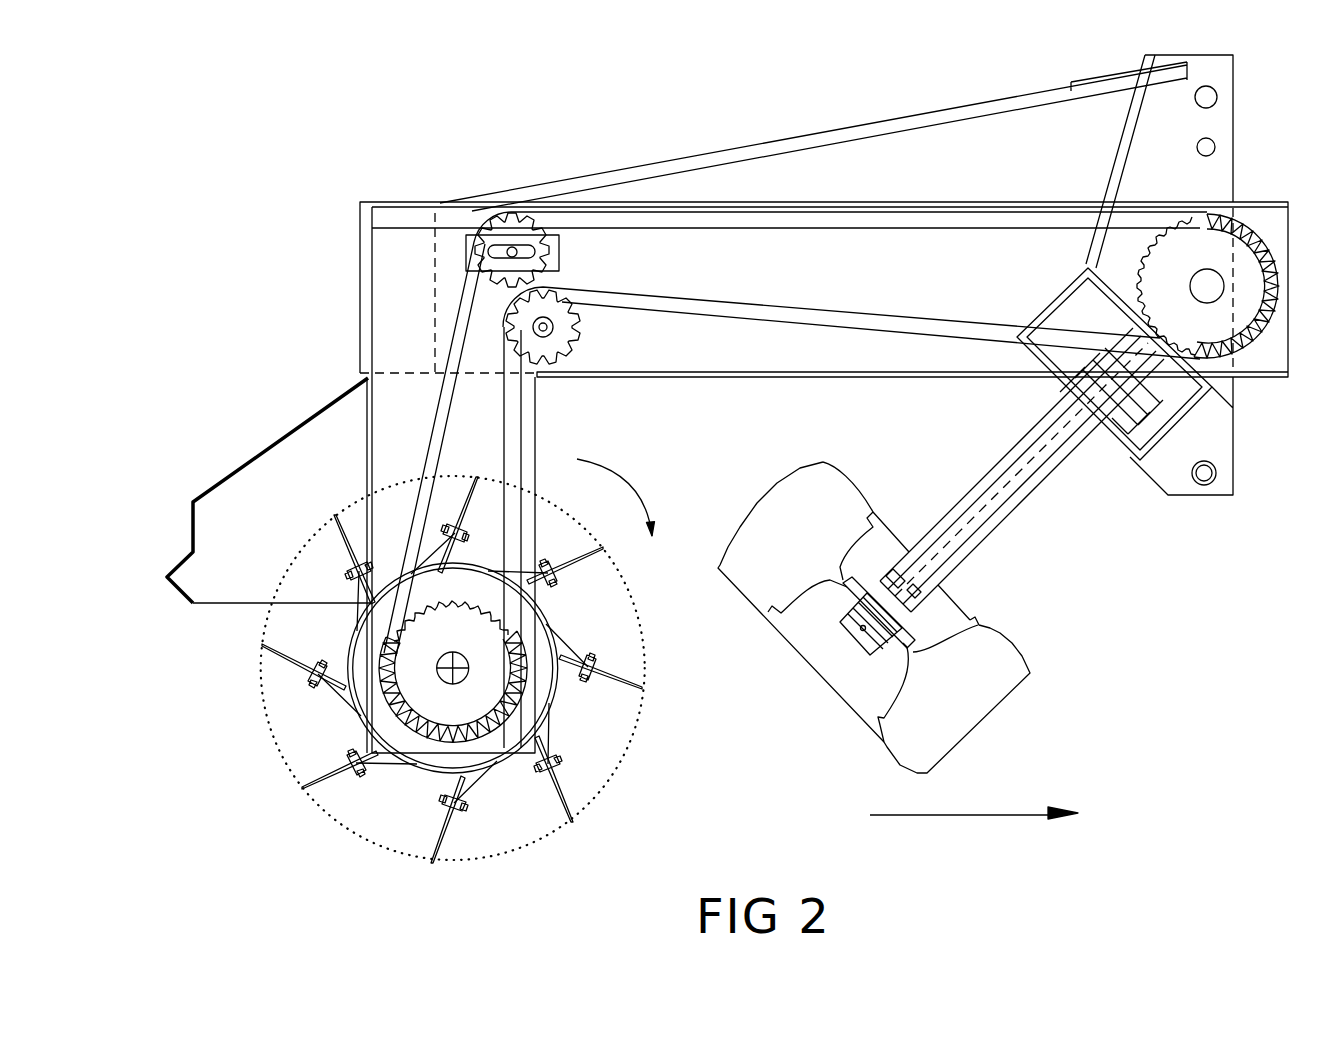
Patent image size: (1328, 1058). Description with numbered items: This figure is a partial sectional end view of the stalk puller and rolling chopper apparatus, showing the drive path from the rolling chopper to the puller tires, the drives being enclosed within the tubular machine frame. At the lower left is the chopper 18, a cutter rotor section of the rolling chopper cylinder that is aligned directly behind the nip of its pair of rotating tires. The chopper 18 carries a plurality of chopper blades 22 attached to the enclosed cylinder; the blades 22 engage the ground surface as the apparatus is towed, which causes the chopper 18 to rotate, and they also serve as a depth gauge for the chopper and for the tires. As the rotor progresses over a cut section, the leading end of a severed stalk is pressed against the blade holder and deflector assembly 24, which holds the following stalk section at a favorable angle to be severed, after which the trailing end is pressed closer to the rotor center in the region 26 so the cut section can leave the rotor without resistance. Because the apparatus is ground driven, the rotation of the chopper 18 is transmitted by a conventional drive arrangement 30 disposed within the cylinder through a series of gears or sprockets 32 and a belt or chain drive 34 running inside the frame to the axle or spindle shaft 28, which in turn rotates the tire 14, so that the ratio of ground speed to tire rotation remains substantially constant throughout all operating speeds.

The rotating tire 14 is at (1021, 689).
The chopper 18 is at (296, 846).
The chopper blade 22 is at (443, 842).
The blade holder and deflector assembly 24 is at (482, 777).
The region 26 is at (540, 812).
The spindle shaft 28 is at (1018, 500).
The drive arrangement 30 is at (410, 638).
The sprocket 32 is at (483, 258).
The chain drive 34 is at (712, 222).